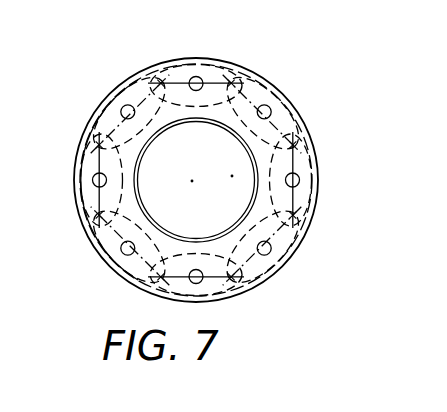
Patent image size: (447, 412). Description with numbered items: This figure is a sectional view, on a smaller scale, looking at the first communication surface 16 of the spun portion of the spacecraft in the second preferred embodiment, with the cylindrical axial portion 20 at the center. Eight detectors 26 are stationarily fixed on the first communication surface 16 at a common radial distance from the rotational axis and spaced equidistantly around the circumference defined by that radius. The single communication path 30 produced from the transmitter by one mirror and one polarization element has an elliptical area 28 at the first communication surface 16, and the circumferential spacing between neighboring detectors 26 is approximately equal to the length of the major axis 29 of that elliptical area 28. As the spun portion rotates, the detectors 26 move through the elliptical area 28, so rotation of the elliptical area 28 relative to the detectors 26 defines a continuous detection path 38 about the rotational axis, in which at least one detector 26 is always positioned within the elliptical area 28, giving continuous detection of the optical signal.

The first communication surface 16 is at (88, 236).
The axial portion 20 is at (155, 132).
The detector 26 is at (189, 78).
The elliptical area 28 is at (232, 287).
The major axis 29 is at (231, 82).
The communication path 30 is at (304, 147).
The detection path 38 is at (299, 184).